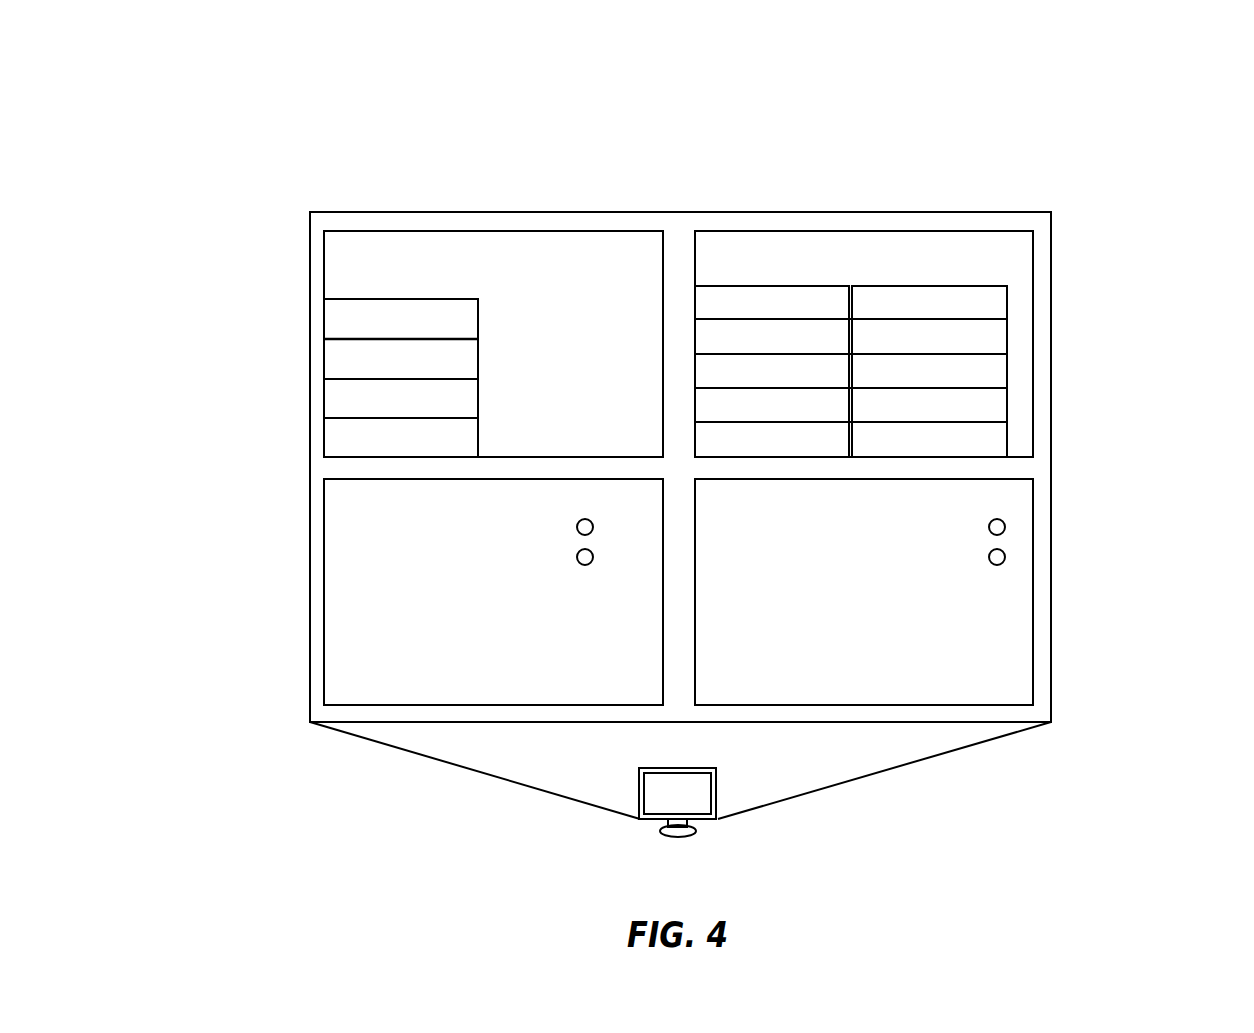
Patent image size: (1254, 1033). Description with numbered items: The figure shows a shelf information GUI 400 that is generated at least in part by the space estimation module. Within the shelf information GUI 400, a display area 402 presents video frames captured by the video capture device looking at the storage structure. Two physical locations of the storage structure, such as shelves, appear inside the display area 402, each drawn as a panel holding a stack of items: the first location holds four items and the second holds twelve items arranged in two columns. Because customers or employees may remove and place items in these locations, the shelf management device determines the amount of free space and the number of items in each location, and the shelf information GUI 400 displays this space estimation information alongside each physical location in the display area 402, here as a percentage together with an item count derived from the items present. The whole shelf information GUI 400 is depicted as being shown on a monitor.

The shelf information GUI 400 is at (1119, 112).
The display area 402 is at (425, 217).